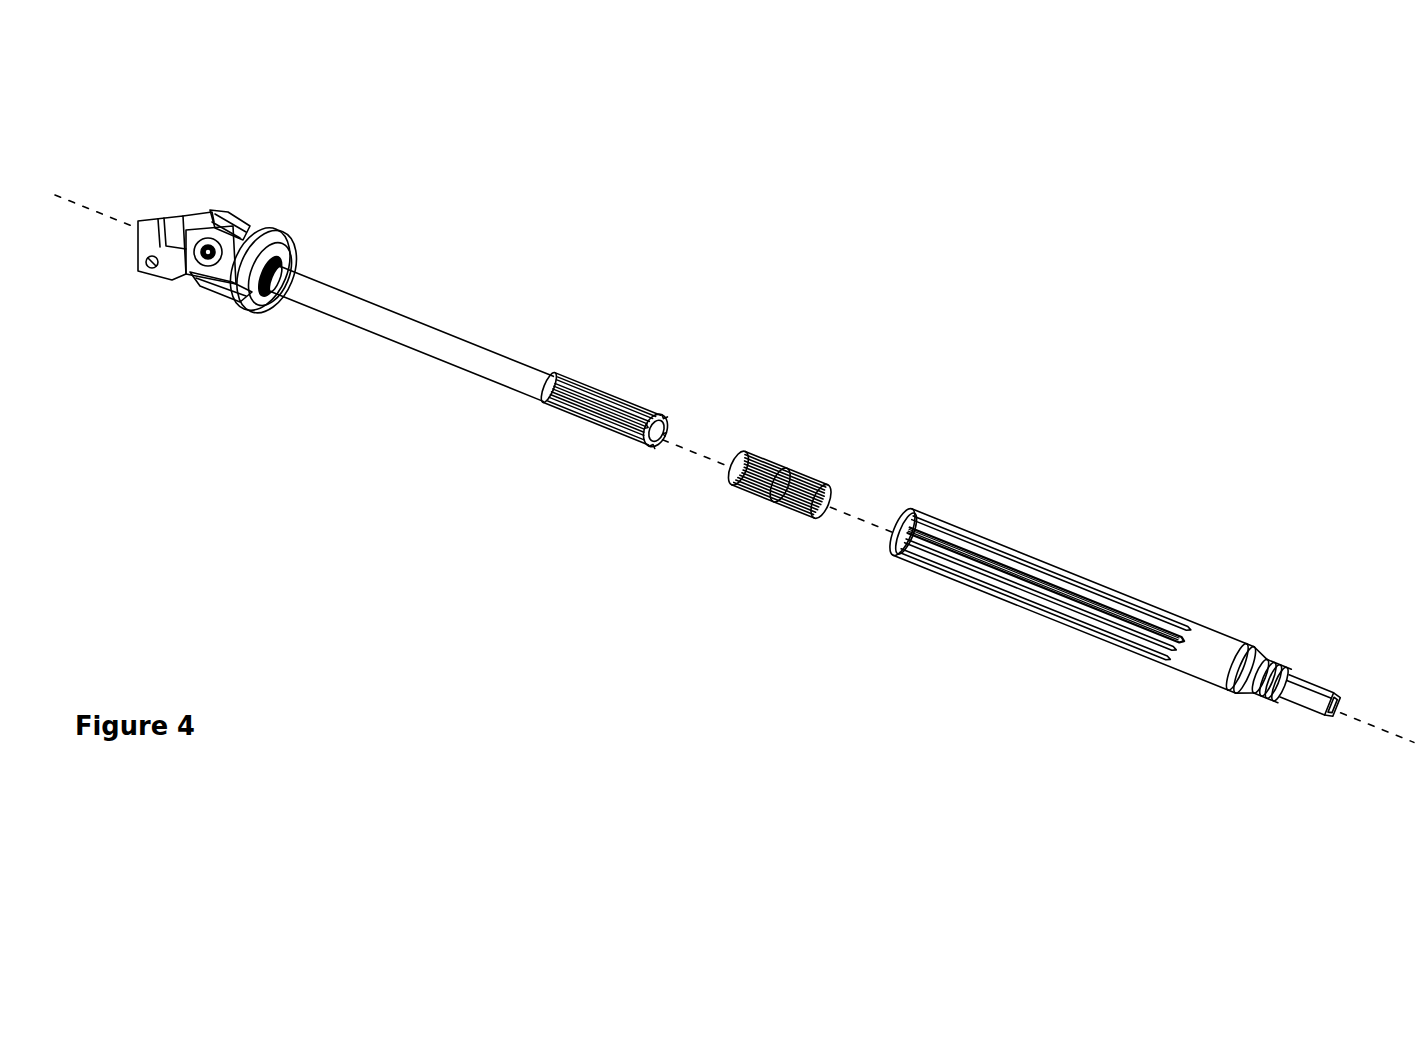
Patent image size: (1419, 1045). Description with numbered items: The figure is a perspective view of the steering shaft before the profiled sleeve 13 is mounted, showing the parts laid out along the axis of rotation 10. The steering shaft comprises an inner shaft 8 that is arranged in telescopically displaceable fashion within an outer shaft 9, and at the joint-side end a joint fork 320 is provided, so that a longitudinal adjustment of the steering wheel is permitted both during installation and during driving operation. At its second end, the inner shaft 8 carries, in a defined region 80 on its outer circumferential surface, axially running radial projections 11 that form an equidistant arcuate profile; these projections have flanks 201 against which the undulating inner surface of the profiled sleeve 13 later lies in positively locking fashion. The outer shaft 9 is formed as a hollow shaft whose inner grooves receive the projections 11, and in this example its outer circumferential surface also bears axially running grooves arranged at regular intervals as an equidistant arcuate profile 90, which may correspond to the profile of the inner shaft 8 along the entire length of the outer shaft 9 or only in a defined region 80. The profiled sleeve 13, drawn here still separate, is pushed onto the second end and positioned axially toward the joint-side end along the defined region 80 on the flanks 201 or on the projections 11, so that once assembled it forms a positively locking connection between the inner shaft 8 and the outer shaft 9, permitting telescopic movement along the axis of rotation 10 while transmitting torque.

The joint fork 320 is at (250, 228).
The inner shaft 8 is at (452, 342).
The defined region 80 is at (598, 438).
The flanks of the radial projections 201 is at (645, 398).
The radial projections 11 is at (660, 440).
The profiled sleeve 13 is at (770, 467).
The arcuate profile 90 is at (1007, 515).
The outer shaft 9 is at (1203, 645).
The axis of rotation 10 is at (1368, 722).